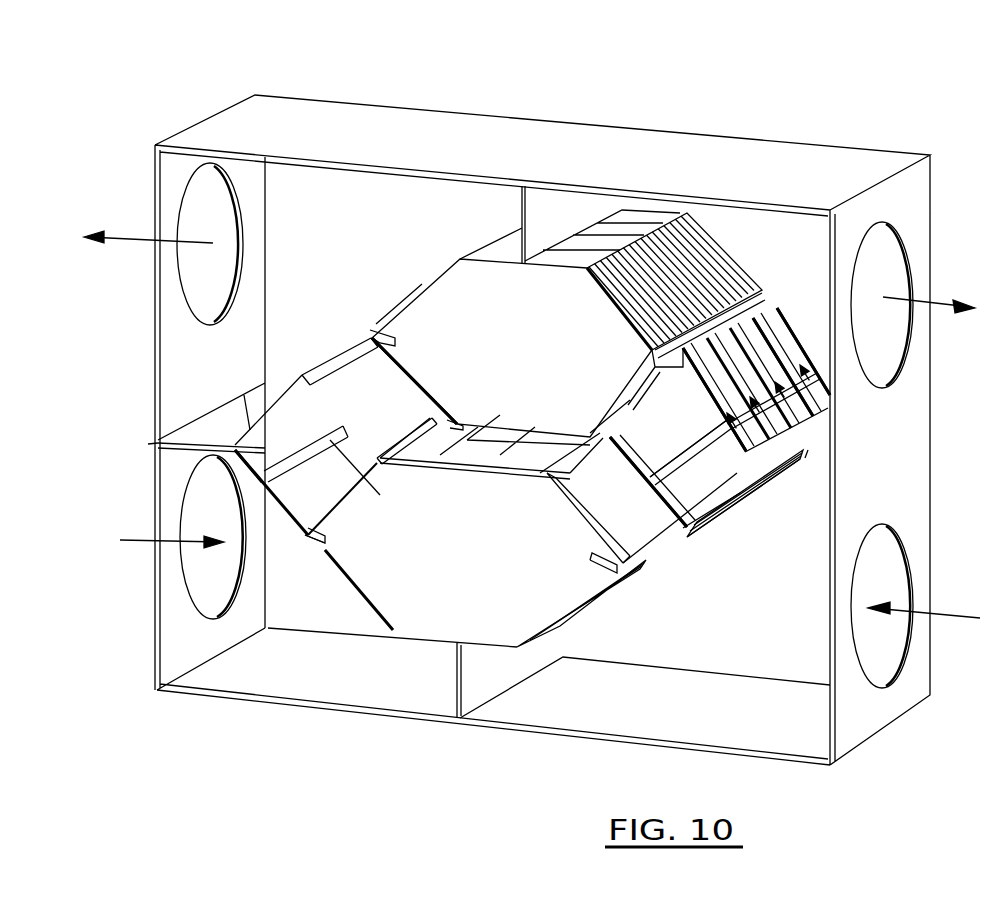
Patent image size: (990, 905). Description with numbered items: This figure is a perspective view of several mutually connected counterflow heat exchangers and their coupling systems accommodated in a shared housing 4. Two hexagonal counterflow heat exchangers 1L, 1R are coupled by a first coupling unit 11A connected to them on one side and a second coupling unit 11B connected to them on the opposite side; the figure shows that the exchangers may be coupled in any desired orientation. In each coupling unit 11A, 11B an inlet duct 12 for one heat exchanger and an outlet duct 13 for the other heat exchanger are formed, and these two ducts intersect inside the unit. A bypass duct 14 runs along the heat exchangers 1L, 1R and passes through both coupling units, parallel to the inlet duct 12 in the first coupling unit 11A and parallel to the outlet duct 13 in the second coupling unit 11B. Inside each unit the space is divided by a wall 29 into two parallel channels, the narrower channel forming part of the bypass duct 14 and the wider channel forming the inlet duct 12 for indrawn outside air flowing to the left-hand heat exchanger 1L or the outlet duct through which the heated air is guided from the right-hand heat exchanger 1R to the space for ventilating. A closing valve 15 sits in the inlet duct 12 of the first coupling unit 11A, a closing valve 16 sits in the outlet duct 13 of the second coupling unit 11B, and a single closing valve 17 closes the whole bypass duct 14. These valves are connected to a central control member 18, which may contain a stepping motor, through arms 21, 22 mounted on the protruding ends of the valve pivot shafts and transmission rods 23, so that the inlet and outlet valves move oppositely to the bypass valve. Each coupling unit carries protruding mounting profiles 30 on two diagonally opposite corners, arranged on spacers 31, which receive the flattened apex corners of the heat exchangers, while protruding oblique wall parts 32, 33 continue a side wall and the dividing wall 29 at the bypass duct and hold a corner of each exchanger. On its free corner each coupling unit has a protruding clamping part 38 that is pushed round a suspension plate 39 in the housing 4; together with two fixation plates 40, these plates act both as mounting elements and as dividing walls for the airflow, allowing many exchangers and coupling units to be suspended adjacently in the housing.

The housing 4 is at (742, 107).
The fixation plate 40 is at (558, 198).
The left-hand heat exchanger 1L is at (633, 233).
The right-hand heat exchanger 1R is at (362, 640).
The first coupling unit 11A is at (722, 305).
The second coupling unit 11B is at (319, 320).
The inlet duct 12 is at (697, 497).
The outlet duct 13 is at (347, 477).
The bypass duct 14 is at (597, 487).
The closing valve 15 is at (690, 478).
The closing valve 16 is at (315, 433).
The closing valve 17 is at (612, 520).
The central control member 18 is at (707, 377).
The arm 21 is at (812, 368).
The arm 22 is at (257, 478).
The rod 23 is at (810, 417).
The dividing wall 29 is at (427, 397).
The mounting profile 30 is at (347, 543).
The spacer 31 is at (320, 537).
The protruding oblique wall part 32 is at (500, 470).
The protruding oblique wall part 33 is at (423, 457).
The clamping part 38 is at (244, 395).
The suspension plate 39 is at (157, 452).